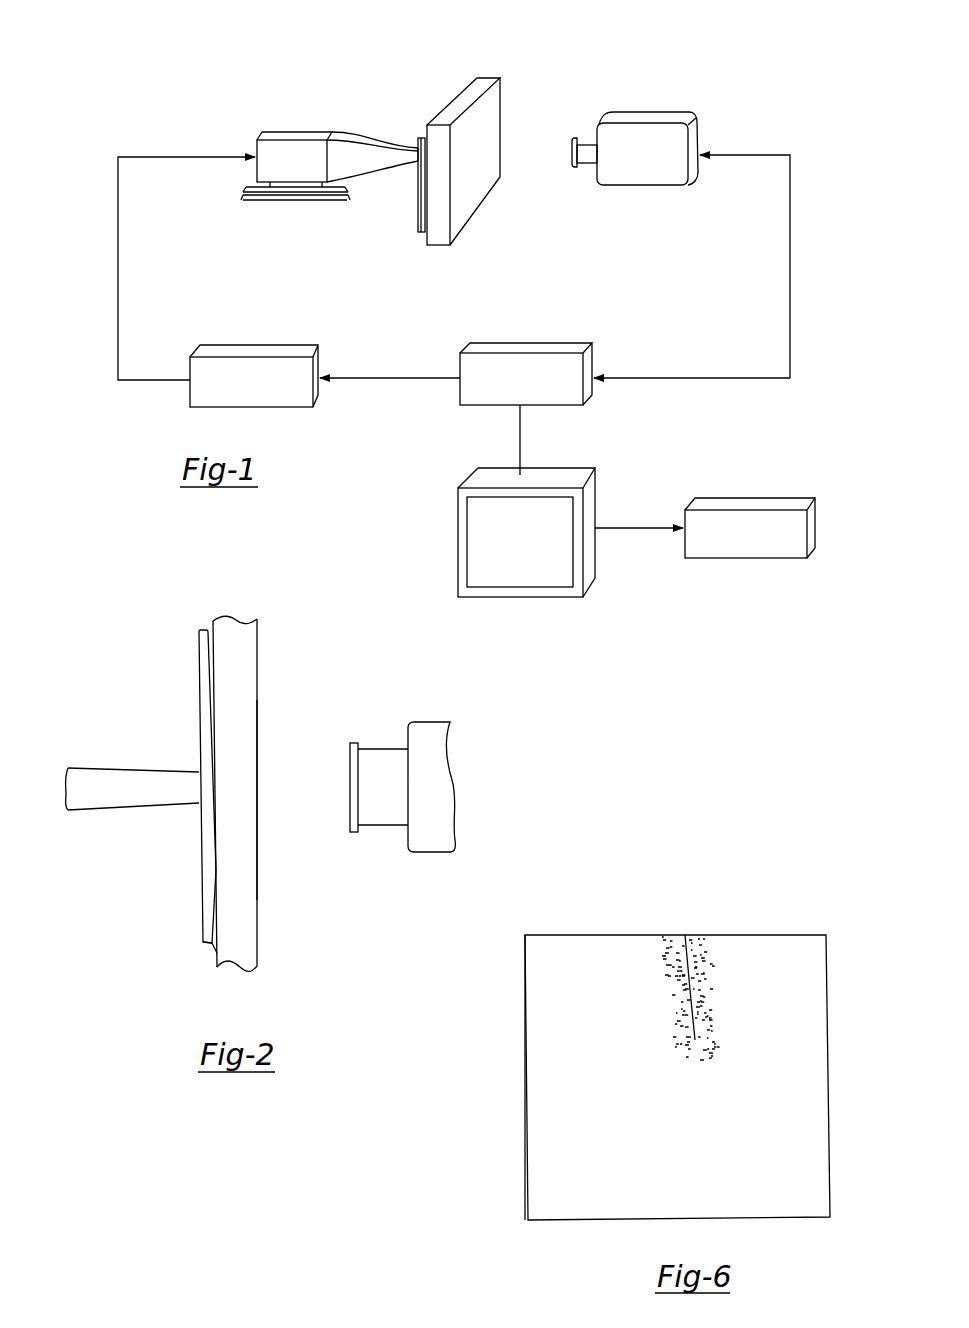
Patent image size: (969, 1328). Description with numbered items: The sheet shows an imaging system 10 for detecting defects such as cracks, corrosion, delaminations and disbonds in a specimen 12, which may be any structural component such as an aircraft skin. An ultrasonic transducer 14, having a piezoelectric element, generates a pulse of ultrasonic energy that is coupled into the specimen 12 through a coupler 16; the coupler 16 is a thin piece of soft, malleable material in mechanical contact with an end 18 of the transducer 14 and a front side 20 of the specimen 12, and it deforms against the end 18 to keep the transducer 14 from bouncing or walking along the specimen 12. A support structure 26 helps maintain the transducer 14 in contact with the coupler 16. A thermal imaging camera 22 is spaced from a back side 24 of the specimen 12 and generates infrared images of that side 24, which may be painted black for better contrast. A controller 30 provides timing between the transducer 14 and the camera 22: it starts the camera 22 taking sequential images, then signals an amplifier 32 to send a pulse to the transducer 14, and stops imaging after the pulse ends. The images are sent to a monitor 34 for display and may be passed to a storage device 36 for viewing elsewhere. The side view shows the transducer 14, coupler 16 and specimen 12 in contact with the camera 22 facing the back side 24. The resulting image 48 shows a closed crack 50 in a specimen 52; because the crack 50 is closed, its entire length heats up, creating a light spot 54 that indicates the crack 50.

In FIG. 1, the imaging system 10 is at (561, 96).
In FIG. 1, the specimen 12 is at (472, 93).
In FIG. 2, the specimen 12 is at (242, 606).
In FIG. 1, the ultrasonic transducer 14 is at (280, 134).
In FIG. 2, the ultrasonic transducer 14 is at (90, 760).
In FIG. 1, the coupler 16 is at (417, 212).
In FIG. 2, the coupler 16 is at (199, 883).
In FIG. 1, the end of the transducer 18 is at (387, 154).
In FIG. 2, the end of the transducer 18 is at (172, 788).
In FIG. 2, the front side of the specimen 20 is at (217, 953).
In FIG. 1, the thermal imaging camera 22 is at (670, 110).
In FIG. 2, the thermal imaging camera 22 is at (432, 721).
In FIG. 1, the back side of the specimen 24 is at (463, 198).
In FIG. 2, the back side of the specimen 24 is at (257, 870).
In FIG. 1, the support structure 26 is at (288, 203).
In FIG. 1, the controller 30 is at (553, 347).
In FIG. 1, the amplifier 32 is at (240, 347).
In FIG. 1, the monitor 34 is at (563, 471).
In FIG. 1, the storage device 36 is at (755, 503).
In FIG. 6, the image 48 is at (719, 910).
In FIG. 6, the closed crack 50 is at (692, 983).
In FIG. 6, the specimen 52 is at (545, 1050).
In FIG. 6, the light spot 54 is at (712, 1037).